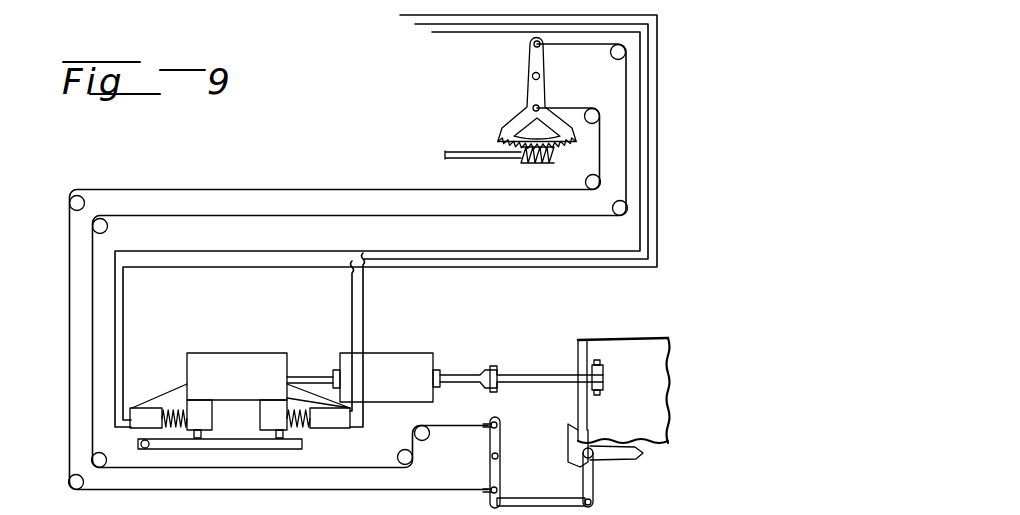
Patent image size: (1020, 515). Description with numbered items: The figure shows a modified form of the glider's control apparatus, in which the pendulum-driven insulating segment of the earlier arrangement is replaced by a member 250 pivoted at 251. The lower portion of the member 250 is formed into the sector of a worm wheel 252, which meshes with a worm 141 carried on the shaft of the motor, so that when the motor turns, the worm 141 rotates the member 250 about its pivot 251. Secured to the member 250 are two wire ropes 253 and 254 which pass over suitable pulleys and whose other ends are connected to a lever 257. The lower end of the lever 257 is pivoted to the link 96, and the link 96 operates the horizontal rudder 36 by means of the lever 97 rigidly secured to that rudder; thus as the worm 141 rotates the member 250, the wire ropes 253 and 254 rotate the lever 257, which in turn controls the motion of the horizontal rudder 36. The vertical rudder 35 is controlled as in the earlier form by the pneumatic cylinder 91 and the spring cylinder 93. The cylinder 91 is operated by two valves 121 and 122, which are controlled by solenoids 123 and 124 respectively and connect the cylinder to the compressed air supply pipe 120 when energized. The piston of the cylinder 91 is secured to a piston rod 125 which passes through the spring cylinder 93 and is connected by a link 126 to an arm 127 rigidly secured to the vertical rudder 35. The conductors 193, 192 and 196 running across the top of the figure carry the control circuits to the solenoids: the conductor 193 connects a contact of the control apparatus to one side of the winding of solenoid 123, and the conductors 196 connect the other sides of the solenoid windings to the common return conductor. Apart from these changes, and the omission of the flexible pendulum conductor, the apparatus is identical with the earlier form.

The conductor 193 is at (400, 15).
The control line 192 is at (415, 24).
The conductors 196 is at (432, 32).
The pivot 251 is at (532, 76).
The wire rope 253 is at (566, 49).
The member 250 is at (546, 91).
The sector of a worm wheel 252 is at (497, 146).
The wire rope 254 is at (571, 110).
The worm 141 is at (535, 163).
The pneumatic cylinder 91 is at (218, 337).
The piston rod 125 is at (316, 378).
The spring cylinder 93 is at (392, 357).
The link 126 is at (519, 374).
The arm 127 is at (604, 374).
The vertical rudder 35 is at (656, 380).
The solenoid 123 is at (148, 413).
The valve 121 is at (208, 409).
The valve 122 is at (263, 417).
The compressed air supply pipe 120 is at (207, 447).
The solenoid 124 is at (328, 430).
The lever 257 is at (500, 440).
The horizontal rudder 36 is at (627, 458).
The link 96 is at (531, 486).
The lever 97 is at (593, 478).